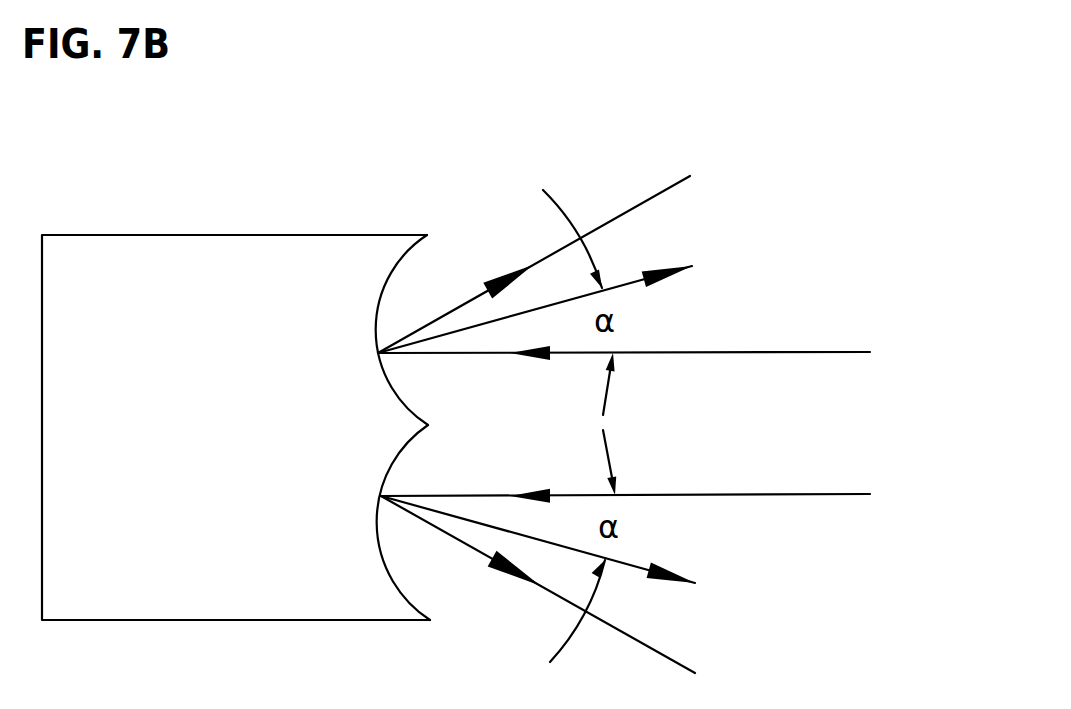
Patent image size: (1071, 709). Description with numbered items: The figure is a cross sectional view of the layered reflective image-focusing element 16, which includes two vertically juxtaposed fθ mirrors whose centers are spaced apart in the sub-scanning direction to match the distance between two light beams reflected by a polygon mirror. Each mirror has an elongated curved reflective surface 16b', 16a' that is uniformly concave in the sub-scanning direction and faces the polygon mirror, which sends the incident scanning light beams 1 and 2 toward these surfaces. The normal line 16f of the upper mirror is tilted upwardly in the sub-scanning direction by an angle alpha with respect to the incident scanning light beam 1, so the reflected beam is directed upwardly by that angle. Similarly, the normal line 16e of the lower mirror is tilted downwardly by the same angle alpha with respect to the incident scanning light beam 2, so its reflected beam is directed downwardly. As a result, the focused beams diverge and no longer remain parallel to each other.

The reflective image-focusing element 16 is at (176, 213).
The reflective surface of upper fθ mirror 16b' is at (443, 305).
The reflective surface of lower fθ mirror 16a' is at (441, 534).
The normal line of upper fθ mirror 16f is at (617, 285).
The normal line of lower fθ mirror 16e is at (546, 569).
The scanning light beam 1 is at (708, 351).
The scanning light beam 2 is at (728, 494).